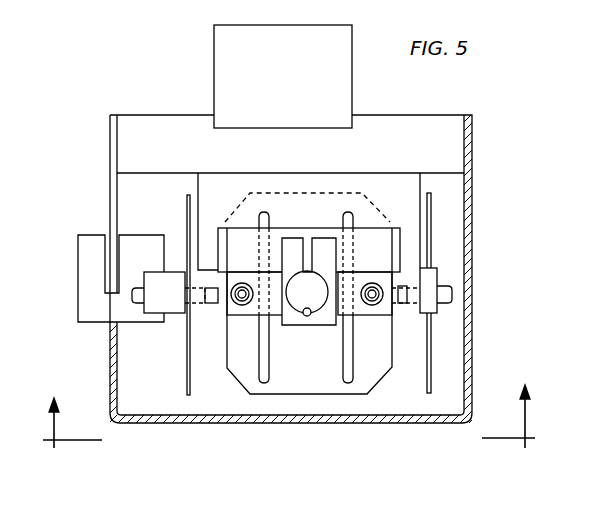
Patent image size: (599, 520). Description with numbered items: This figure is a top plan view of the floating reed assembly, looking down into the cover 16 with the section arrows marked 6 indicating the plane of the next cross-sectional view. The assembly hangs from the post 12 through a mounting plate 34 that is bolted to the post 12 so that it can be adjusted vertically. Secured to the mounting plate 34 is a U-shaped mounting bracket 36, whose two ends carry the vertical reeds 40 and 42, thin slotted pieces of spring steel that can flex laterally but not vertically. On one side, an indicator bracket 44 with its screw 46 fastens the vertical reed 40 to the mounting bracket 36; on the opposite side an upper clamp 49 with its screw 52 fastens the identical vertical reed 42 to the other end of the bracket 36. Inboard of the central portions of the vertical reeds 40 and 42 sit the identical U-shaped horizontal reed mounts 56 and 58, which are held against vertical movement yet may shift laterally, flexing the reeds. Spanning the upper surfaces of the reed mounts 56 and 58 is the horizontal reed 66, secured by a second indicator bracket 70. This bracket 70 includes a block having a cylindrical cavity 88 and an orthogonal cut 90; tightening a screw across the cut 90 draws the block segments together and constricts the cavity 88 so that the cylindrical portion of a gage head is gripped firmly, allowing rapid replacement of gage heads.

The post 12 is at (330, 85).
The cover 16 is at (472, 350).
The mounting plate 34 is at (395, 130).
The mounting bracket 36 is at (230, 188).
The vertical reed 40 is at (187, 367).
The vertical reed 42 is at (427, 375).
The indicator bracket 44 is at (104, 240).
The screw 46 is at (140, 290).
The upper clamp 49 is at (437, 275).
The screw 52 is at (452, 293).
The horizontal reed mount 56 is at (226, 310).
The horizontal reed mount 58 is at (394, 306).
The horizontal reed 66 is at (352, 382).
The indicator bracket 70 is at (320, 250).
The cylindrical cavity 88 is at (307, 316).
The orthogonal cut 90 is at (305, 255).
The section line 6- 6 is at (289, 406).